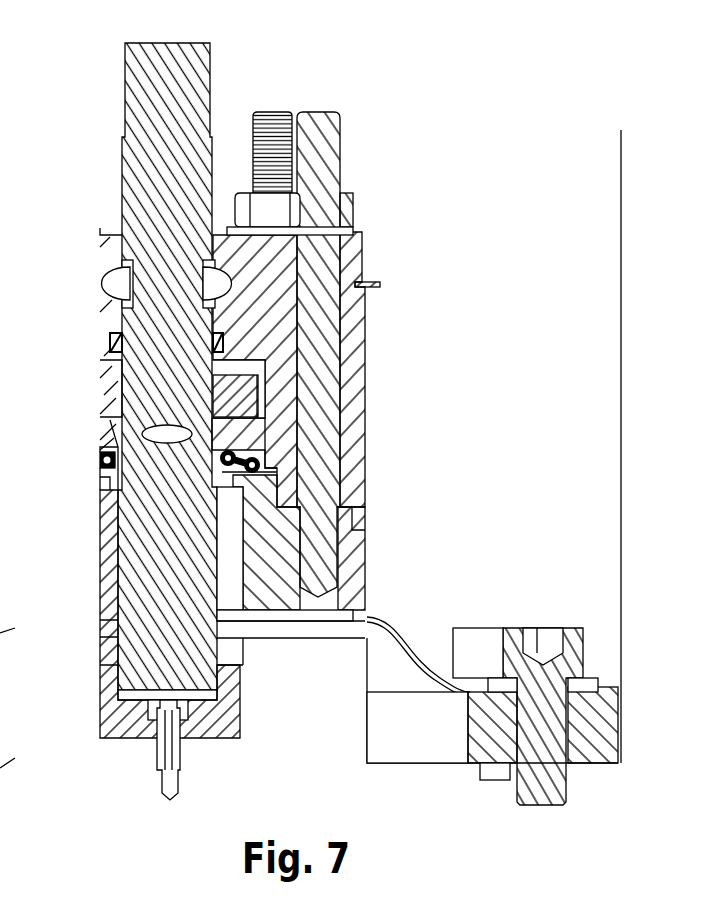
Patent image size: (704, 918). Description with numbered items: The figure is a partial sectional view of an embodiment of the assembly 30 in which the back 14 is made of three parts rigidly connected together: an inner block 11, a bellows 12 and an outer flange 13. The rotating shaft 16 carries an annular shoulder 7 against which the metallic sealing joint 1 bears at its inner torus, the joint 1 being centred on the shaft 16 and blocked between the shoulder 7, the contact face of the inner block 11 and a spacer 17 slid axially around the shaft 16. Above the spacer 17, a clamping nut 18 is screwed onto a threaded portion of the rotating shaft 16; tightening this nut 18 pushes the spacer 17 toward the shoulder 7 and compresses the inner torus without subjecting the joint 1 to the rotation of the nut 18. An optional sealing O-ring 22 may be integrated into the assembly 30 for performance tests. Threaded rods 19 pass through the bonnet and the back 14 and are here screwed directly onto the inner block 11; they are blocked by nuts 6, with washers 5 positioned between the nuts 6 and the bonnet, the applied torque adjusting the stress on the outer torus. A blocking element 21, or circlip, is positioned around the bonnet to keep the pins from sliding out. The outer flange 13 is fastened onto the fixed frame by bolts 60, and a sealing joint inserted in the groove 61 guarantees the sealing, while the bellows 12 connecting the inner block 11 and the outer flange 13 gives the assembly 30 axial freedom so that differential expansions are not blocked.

The metallic sealing joint 1 is at (103, 460).
The washers 5 is at (363, 230).
The nuts 6 is at (240, 208).
The annular shoulder 7 is at (100, 480).
The inner block 11 is at (355, 567).
The bellows 12 is at (388, 637).
The outer flange 13 is at (603, 687).
The back 14 is at (658, 507).
The rotating shaft 16 is at (147, 92).
The spacer 17 is at (108, 436).
The clamping nut 18 is at (110, 390).
The threaded rods 19 is at (318, 127).
The blocking element (circlip) 21 is at (380, 285).
The sealing O-ring 22 is at (112, 340).
The assembly 30 is at (350, 98).
The bolts 60 is at (553, 720).
The groove 61 is at (493, 780).